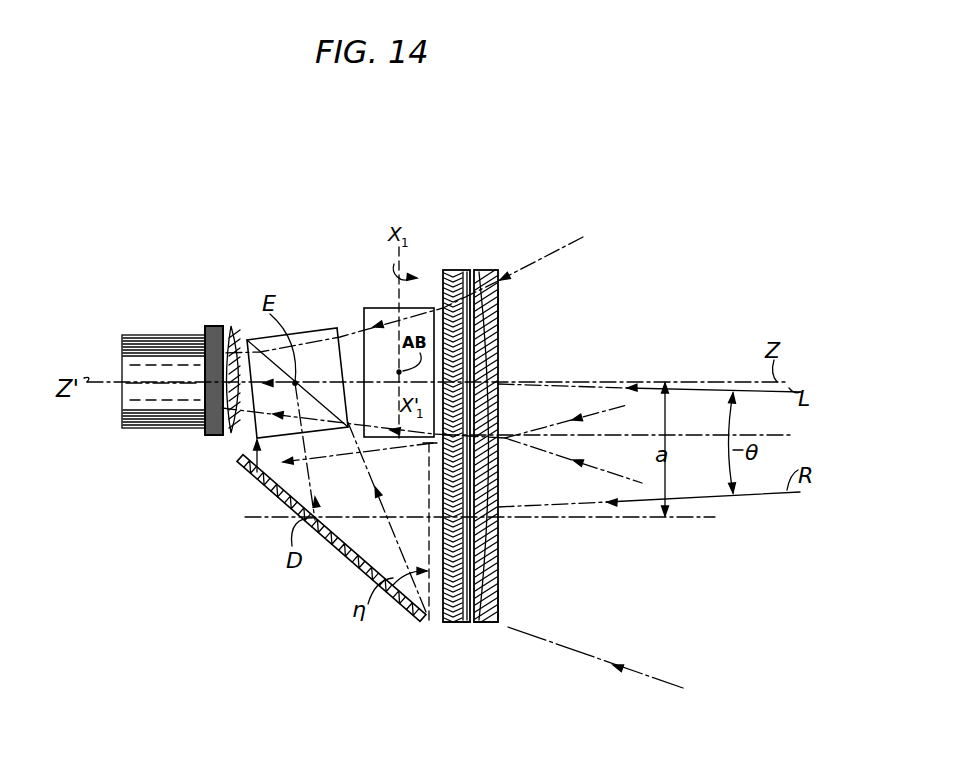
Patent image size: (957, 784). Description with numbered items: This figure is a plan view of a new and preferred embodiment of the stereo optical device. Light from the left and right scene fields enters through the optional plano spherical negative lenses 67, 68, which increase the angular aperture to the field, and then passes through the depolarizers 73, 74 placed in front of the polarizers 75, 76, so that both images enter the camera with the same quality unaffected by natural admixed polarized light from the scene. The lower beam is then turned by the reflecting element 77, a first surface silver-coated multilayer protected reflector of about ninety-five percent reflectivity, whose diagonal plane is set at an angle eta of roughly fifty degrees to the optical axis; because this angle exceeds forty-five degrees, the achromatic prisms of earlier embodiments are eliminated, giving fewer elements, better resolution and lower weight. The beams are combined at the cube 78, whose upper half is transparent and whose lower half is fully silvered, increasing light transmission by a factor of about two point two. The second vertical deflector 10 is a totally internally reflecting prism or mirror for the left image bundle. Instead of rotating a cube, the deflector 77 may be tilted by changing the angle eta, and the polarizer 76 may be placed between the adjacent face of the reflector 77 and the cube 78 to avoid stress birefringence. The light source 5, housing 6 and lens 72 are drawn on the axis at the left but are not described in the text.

The light source 5 is at (165, 383).
The lamp housing 6 is at (152, 347).
The condenser lens 72 is at (233, 330).
The cube 78 is at (318, 332).
The second vertical deflector 10 is at (373, 315).
The polarizer 75 is at (449, 270).
The depolarizer 73 is at (460, 272).
The plano spherical negative lens 67 is at (498, 308).
The plano spherical negative lens 68 is at (498, 605).
The reflecting element 77 is at (346, 536).
The polarizer 76 is at (447, 623).
The depolarizer 74 is at (466, 623).